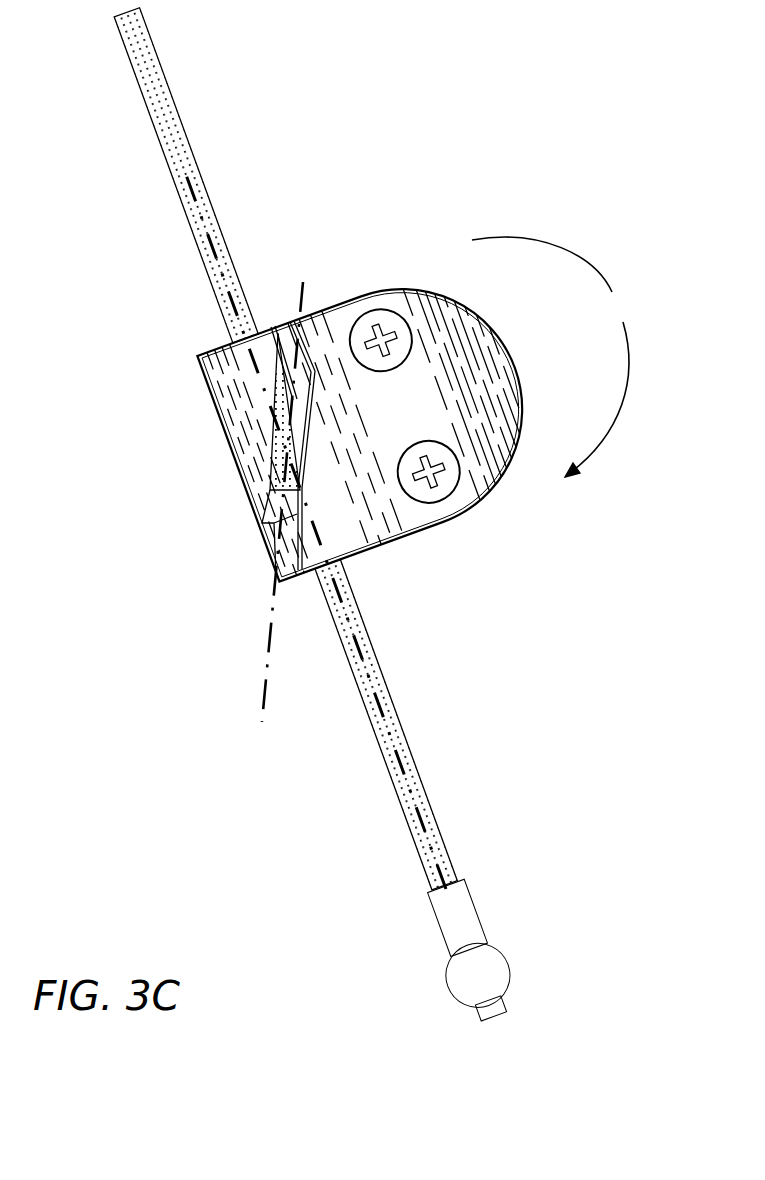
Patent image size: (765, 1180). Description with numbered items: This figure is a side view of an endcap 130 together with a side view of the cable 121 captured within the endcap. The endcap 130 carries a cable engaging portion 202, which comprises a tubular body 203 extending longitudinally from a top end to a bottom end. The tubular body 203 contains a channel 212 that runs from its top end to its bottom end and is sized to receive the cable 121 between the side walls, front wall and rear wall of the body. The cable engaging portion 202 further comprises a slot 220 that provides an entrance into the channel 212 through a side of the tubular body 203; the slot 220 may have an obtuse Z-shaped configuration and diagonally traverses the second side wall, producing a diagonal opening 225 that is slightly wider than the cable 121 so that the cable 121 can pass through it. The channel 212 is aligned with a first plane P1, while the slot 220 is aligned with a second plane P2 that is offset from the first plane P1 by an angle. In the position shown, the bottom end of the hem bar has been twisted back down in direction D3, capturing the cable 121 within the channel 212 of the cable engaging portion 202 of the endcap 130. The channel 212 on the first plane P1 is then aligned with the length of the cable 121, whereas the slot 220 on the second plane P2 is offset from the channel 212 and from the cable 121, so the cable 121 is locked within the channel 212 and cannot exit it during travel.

The cable 121 is at (152, 79).
The endcap 130 is at (372, 293).
The cable engaging portion 202 is at (214, 356).
The tubular body 203 is at (222, 393).
The channel 212 is at (271, 327).
The slot 220 is at (265, 505).
The diagonal opening 225 is at (277, 473).
The first plane P1 is at (361, 647).
The second plane P2 is at (268, 660).
The direction D3 is at (553, 357).